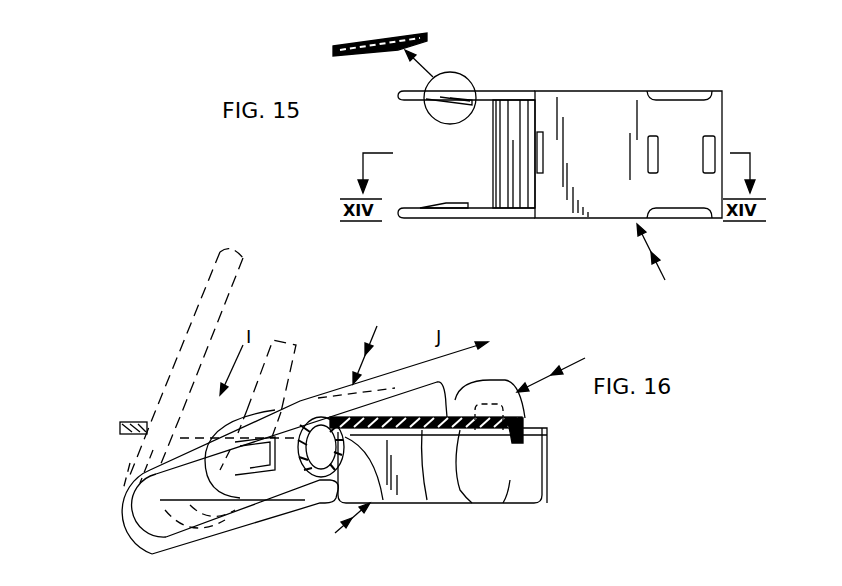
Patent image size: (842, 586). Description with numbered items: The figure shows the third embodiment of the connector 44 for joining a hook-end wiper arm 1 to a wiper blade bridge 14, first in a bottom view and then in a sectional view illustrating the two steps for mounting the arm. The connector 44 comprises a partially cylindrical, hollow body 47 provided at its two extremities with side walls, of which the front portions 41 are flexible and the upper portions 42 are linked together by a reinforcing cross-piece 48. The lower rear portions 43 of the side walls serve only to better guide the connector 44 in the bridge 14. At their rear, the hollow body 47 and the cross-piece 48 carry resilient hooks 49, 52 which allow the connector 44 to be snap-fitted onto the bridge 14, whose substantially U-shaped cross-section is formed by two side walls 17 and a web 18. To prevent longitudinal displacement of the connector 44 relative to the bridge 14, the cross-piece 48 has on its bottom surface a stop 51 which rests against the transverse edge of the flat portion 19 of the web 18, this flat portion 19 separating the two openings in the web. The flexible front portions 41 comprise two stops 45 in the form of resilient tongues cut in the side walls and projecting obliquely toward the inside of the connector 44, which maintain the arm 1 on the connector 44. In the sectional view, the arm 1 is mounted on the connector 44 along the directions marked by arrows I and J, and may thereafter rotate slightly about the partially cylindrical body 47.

In FIG. 16, the hook-end wiper arm 1 is at (259, 388).
In FIG. 16, the wiper blade bridge 14 is at (305, 451).
In FIG. 16, the side walls 17 is at (530, 475).
In FIG. 16, the web 18 is at (130, 422).
In FIG. 16, the flat portion 19 is at (427, 503).
In FIG. 15, the front portions of side walls 41 is at (408, 37).
In FIG. 16, the upper portions of side walls 42 is at (462, 395).
In FIG. 15, the lower rear portions of side walls 43 is at (683, 98).
In FIG. 16, the lower rear portions of side walls 43 is at (505, 503).
In FIG. 15, the connector 44 is at (657, 264).
In FIG. 16, the connector 44 is at (558, 362).
In FIG. 15, the stops 45 is at (375, 52).
In FIG. 16, the stops 45 is at (260, 455).
In FIG. 15, the partially cylindrical body 47 is at (501, 135).
In FIG. 16, the partially cylindrical body 47 is at (312, 417).
In FIG. 15, the reinforcing cross-piece 48 is at (613, 183).
In FIG. 15, the resilient hook 49 is at (539, 140).
In FIG. 16, the resilient hook 49 is at (383, 503).
In FIG. 15, the stop 51 is at (652, 140).
In FIG. 16, the stop 51 is at (472, 503).
In FIG. 15, the resilient hook 52 is at (718, 145).
In FIG. 16, the resilient hook 52 is at (522, 440).